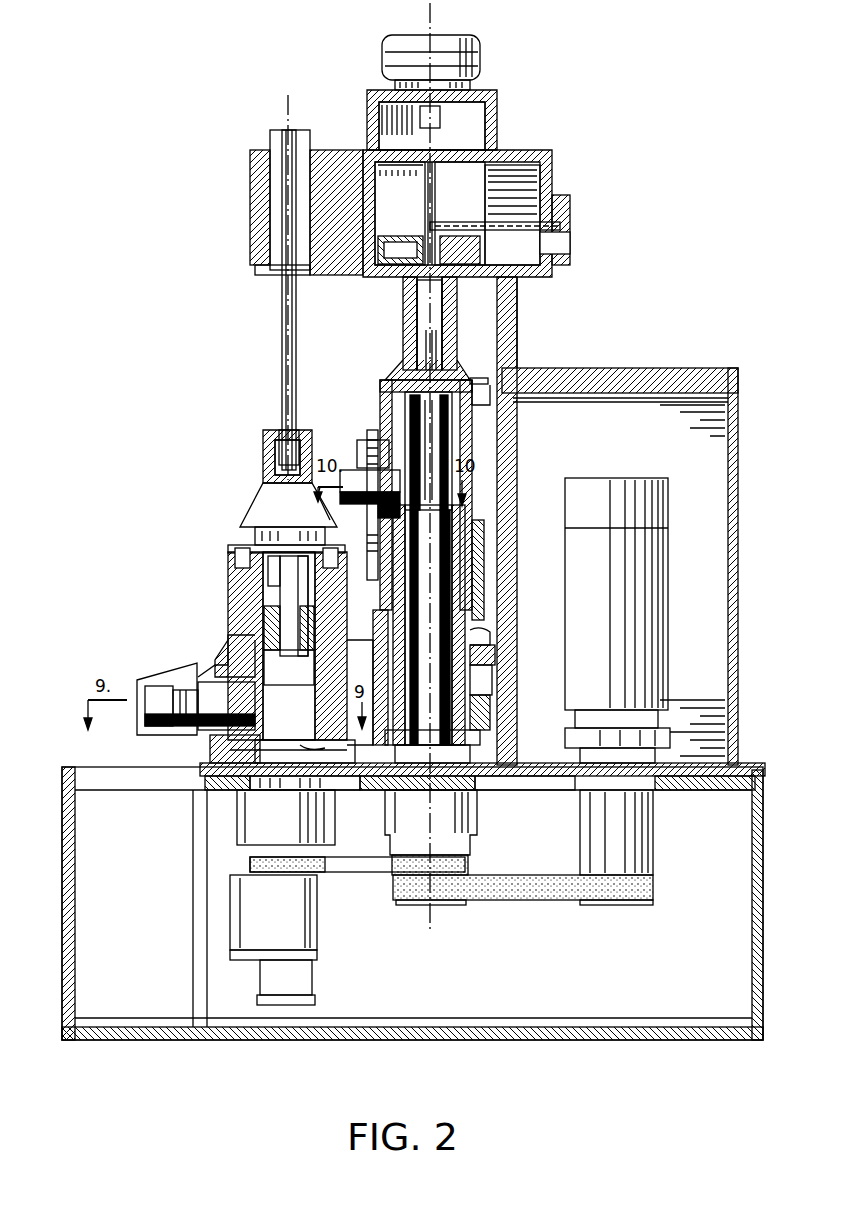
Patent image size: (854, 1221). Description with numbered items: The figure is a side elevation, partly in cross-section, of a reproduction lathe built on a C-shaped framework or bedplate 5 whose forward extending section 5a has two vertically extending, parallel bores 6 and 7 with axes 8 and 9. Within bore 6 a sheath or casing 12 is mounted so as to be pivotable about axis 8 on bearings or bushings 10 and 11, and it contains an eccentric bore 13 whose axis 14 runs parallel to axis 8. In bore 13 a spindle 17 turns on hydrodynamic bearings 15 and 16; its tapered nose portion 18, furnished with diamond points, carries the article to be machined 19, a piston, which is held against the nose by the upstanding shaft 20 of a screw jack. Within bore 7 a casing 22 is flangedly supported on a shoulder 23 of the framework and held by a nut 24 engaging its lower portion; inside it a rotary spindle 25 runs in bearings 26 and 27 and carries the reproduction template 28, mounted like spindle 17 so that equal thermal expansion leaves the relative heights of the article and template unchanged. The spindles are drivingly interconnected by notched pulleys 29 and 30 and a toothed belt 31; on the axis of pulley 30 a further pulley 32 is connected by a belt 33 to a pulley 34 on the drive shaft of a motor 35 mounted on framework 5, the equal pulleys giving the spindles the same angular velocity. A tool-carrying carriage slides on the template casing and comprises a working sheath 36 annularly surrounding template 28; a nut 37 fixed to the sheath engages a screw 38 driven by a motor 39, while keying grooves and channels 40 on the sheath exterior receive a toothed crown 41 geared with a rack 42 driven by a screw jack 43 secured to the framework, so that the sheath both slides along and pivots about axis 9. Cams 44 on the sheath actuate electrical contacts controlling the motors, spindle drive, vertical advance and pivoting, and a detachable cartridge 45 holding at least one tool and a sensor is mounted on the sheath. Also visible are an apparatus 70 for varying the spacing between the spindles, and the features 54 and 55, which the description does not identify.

The C-shaped framework or bedplate 5 is at (720, 606).
The forward extending section 5a is at (228, 636).
The bore 6 is at (340, 592).
The bore 7 is at (485, 684).
The axis 8 is at (288, 115).
The axis 9 is at (430, 22).
The bearing or bushing 10 is at (238, 552).
The bearing or bushing 11 is at (212, 748).
The sheath or casing 12 is at (226, 655).
The eccentric bore 13 is at (264, 615).
The axis 14 is at (296, 435).
The hydrodynamic bearing 15 is at (310, 745).
The hydrodynamic bearing 16 is at (268, 568).
The spindle 17 is at (280, 582).
The tapered nose portion 18 is at (258, 502).
The article to be machined 19 is at (264, 450).
The upstanding shaft 20 is at (282, 338).
The casing 22 is at (485, 662).
The shoulder 23 is at (492, 634).
The nut 24 is at (480, 745).
The rotary spindle 25 is at (485, 568).
The bearing 26 is at (480, 532).
The bearing 27 is at (485, 710).
The reproduction template 28 is at (513, 426).
The notched pulley 29 is at (315, 875).
The notched pulley 30 is at (468, 860).
The toothed belt 31 is at (360, 866).
The pulley 32 is at (418, 905).
The belt 33 is at (518, 900).
The pulley 34 is at (628, 905).
The motor 35 is at (580, 592).
The working sheath 36 is at (403, 322).
The nut 37 is at (403, 368).
The screw 38 is at (428, 180).
The motor 39 is at (478, 52).
The keying grooves and channels 40 is at (457, 345).
The crown 41 is at (390, 236).
The rack 42 is at (466, 230).
The screw jack 43 is at (508, 225).
The cam 44 is at (486, 392).
The detachable cartridge 45 is at (367, 445).
The arm 54 is at (318, 490).
The pin 55 is at (420, 480).
The apparatus for varying spindle spacing 70 is at (250, 700).